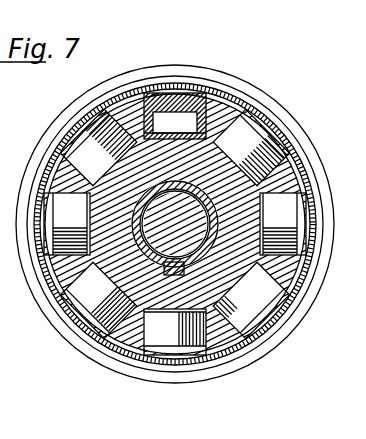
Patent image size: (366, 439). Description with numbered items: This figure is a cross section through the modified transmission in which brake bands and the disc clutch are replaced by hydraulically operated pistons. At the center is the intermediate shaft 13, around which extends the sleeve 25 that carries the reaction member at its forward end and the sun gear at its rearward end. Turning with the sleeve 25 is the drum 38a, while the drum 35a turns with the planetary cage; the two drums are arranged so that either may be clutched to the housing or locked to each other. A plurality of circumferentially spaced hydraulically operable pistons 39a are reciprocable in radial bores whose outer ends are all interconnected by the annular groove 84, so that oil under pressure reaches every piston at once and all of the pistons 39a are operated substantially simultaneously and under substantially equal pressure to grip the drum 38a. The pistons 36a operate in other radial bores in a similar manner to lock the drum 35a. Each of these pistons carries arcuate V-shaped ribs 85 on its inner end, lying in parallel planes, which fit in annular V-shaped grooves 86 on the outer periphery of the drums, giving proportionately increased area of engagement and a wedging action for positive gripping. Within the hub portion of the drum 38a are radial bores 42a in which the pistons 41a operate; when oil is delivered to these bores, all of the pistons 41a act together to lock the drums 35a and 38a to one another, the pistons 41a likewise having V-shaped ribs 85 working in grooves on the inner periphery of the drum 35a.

The drum 35a is at (239, 373).
The radial bores 42a is at (259, 92).
The annular V-shaped grooves 86 is at (289, 169).
The hydraulically operable pistons 41a is at (204, 93).
The intermediate shaft 13 is at (127, 267).
The arcuate V-shaped ribs 85 is at (103, 117).
The sleeve 25 is at (283, 270).
The drum 38a is at (133, 330).
The annular groove 84 is at (7, 157).
The hydraulically operable pistons 39a is at (11, 237).
The hydraulically operable pistons 36a is at (11, 321).